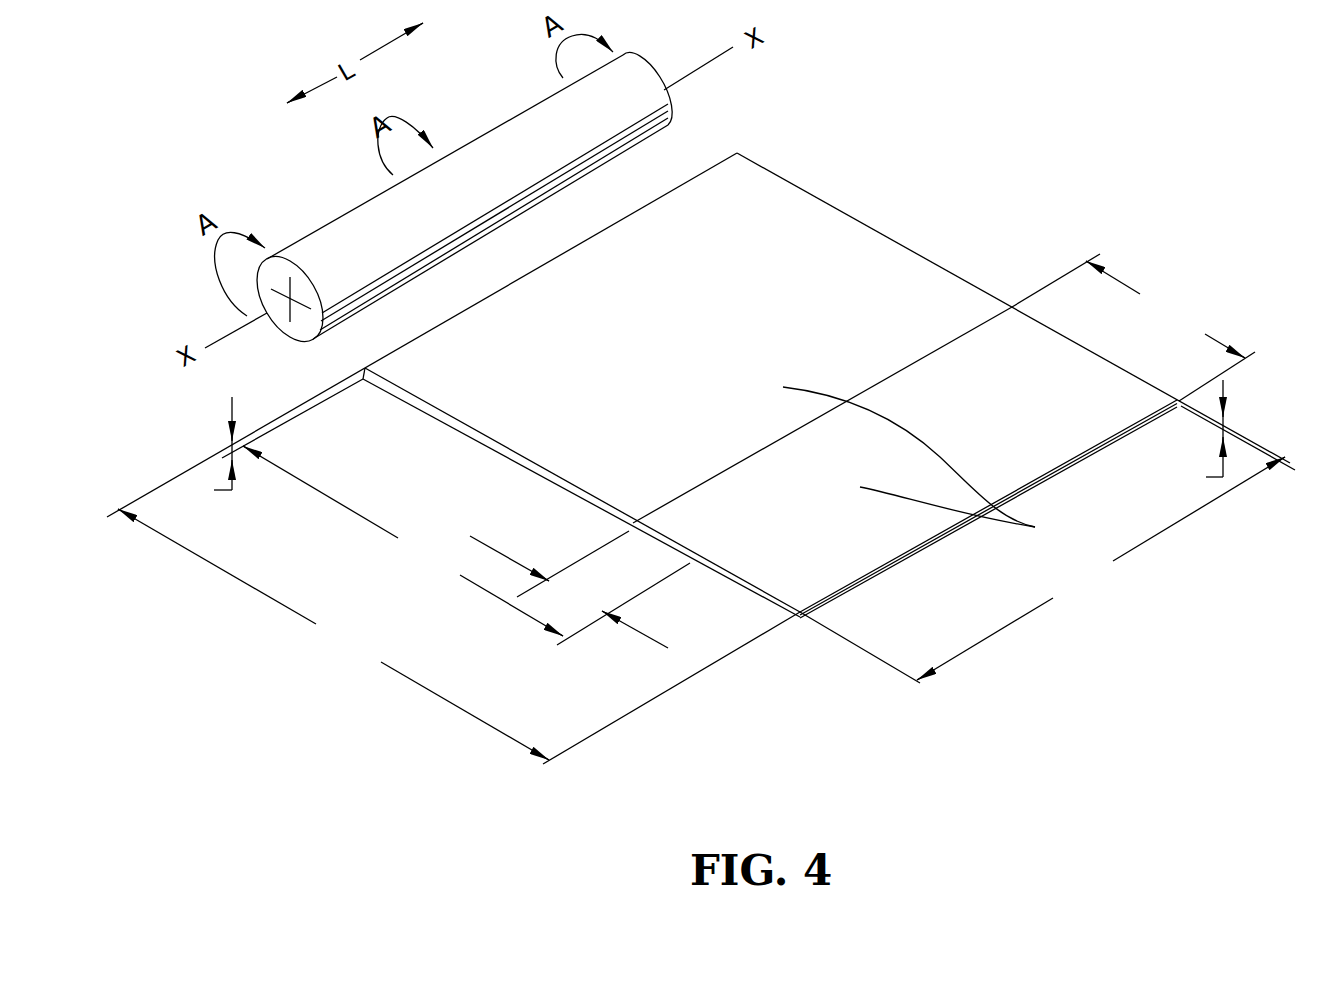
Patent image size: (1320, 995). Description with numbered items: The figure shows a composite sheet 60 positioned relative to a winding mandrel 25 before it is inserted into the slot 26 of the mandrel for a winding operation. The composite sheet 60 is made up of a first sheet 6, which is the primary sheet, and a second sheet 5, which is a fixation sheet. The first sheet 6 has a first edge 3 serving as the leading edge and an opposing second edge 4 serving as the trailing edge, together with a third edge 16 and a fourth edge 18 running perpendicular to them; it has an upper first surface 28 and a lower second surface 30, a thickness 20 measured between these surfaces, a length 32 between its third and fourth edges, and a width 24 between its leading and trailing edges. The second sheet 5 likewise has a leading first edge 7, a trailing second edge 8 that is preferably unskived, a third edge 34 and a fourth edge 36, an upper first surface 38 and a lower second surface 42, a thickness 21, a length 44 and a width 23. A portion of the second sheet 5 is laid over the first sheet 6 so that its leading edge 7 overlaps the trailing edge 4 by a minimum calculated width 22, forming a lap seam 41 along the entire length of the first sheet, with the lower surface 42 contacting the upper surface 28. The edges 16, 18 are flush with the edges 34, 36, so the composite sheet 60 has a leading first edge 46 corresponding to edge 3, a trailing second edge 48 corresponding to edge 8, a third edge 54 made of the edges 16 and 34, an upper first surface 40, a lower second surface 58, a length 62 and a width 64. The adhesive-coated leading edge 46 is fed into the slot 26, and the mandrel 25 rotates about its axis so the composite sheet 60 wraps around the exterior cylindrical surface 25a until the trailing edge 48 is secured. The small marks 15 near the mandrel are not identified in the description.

The first edge 3 is at (735, 155).
The second edge 4 is at (652, 612).
The second sheet 5 is at (1068, 458).
The first sheet 6 is at (826, 304).
The first edge 7 is at (967, 316).
The second edge 8 is at (875, 571).
The adhesive 15 is at (520, 244).
The third edge 16 is at (414, 402).
The fourth edge 18 is at (793, 183).
The thickness 20 is at (197, 461).
The thickness 21 is at (1189, 440).
The minimum calculated width 22 is at (569, 589).
The width 23 is at (1133, 327).
The width 24 is at (456, 512).
The winding mandrel 25 is at (500, 108).
The exterior cylindrical surface 25a is at (337, 240).
The slot 26 is at (685, 120).
The first surface 28 is at (757, 188).
The second surface 30 is at (473, 454).
The length 32 is at (1042, 570).
The third edge 34 is at (693, 562).
The fourth edge 36 is at (1060, 331).
The first surface 38 is at (1108, 387).
The first surface 40 is at (925, 465).
The lap seam 41 is at (665, 553).
The second surface 42 is at (794, 622).
The length 44 is at (1090, 575).
The first edge 46 is at (463, 317).
The second edge 48 is at (830, 600).
The third edge 54 is at (585, 511).
The second surface 58 is at (907, 248).
The composite sheet 60 is at (870, 163).
The length 62 is at (1153, 575).
The width 64 is at (459, 636).